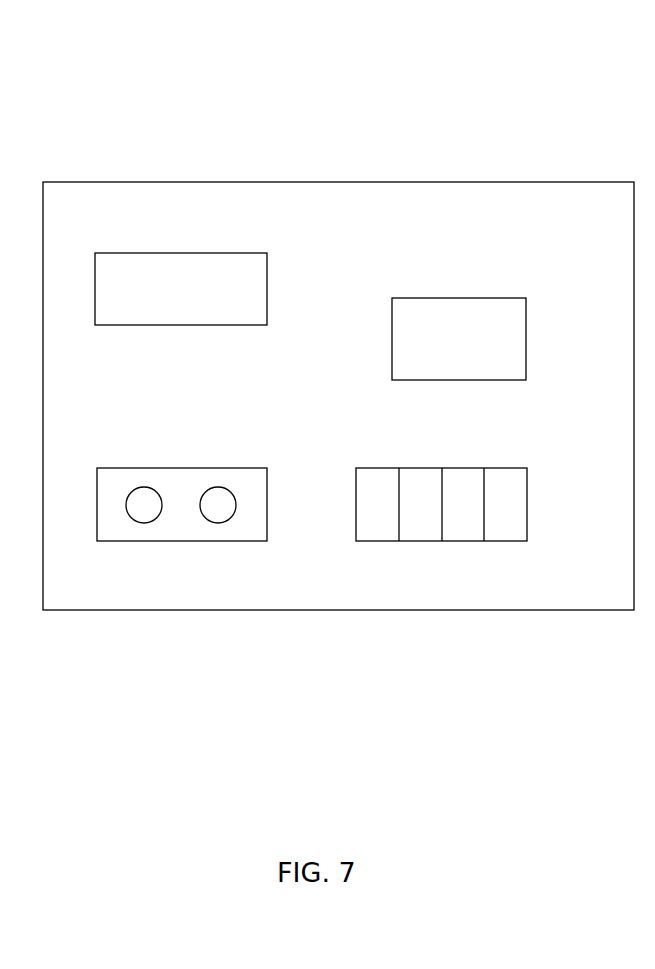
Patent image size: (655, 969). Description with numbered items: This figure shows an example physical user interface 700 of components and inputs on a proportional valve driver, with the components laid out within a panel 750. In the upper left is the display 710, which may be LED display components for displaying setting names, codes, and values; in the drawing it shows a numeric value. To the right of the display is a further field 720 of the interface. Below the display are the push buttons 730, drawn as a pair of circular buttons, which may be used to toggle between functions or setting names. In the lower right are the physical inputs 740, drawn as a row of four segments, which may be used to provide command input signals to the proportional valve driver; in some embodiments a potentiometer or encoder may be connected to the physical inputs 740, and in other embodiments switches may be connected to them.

The user interface display 700 is at (504, 70).
The display screen 750 is at (400, 182).
The display 710 is at (230, 253).
The display field 720 is at (492, 298).
The push buttons 730 is at (220, 468).
The physical inputs 740 is at (492, 468).